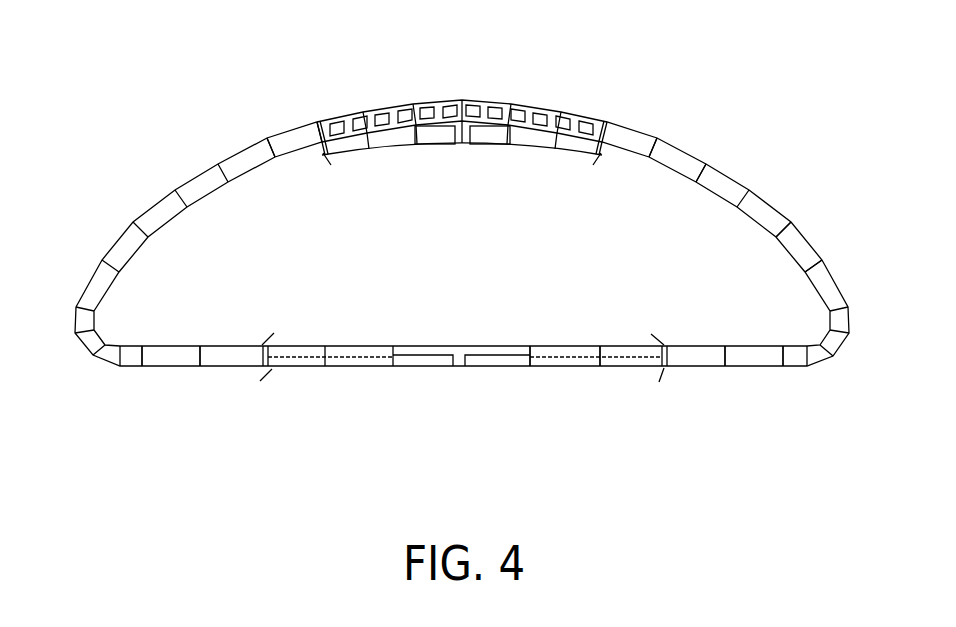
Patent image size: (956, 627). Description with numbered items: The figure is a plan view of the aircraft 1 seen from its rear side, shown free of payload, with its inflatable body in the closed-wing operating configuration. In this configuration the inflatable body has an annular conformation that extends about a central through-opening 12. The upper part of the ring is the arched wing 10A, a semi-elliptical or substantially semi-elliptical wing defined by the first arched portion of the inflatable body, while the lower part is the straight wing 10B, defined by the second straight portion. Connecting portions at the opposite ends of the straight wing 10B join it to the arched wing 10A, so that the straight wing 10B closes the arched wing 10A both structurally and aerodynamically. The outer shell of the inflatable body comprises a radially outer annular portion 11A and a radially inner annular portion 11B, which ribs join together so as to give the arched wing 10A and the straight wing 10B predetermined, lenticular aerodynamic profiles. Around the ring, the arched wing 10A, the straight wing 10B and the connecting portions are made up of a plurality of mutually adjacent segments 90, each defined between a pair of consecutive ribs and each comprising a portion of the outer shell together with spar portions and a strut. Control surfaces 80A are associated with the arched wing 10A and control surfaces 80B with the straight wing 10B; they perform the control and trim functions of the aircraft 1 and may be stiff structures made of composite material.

The aircraft 1 is at (216, 107).
The arched wing 10A is at (263, 144).
The straight wing 10B is at (358, 366).
The radially outer annular portion 11A is at (677, 143).
The radially inner annular portion 11B is at (283, 160).
The through-opening 12 is at (459, 252).
The control surface 80A is at (428, 134).
The control surface 80B is at (410, 362).
The segment 90 is at (732, 173).